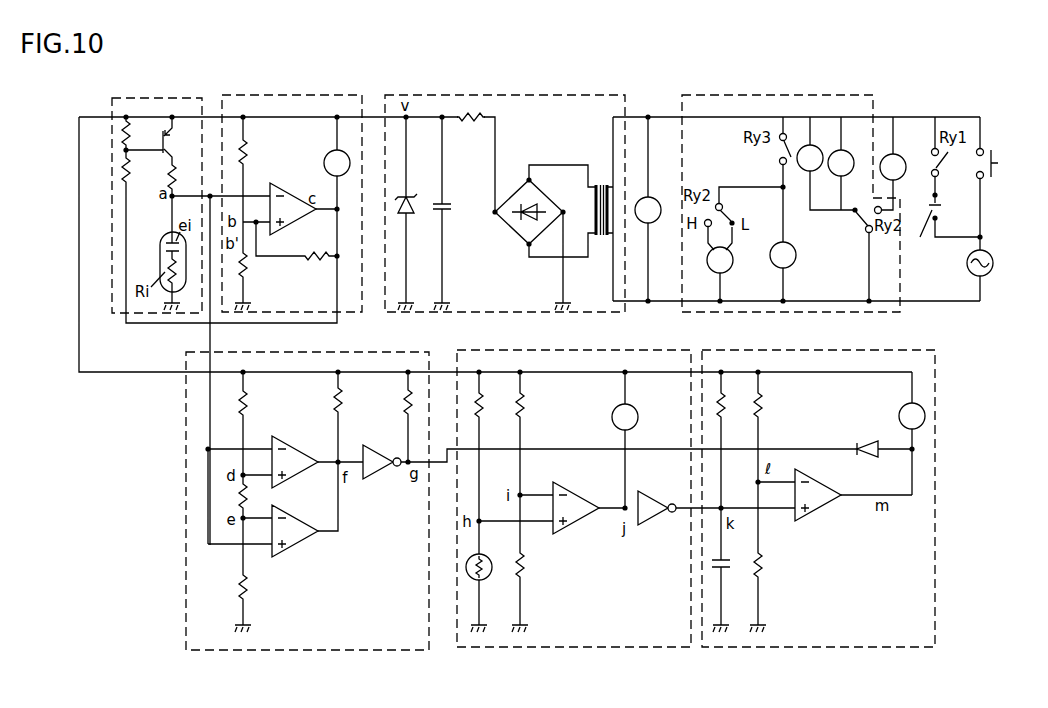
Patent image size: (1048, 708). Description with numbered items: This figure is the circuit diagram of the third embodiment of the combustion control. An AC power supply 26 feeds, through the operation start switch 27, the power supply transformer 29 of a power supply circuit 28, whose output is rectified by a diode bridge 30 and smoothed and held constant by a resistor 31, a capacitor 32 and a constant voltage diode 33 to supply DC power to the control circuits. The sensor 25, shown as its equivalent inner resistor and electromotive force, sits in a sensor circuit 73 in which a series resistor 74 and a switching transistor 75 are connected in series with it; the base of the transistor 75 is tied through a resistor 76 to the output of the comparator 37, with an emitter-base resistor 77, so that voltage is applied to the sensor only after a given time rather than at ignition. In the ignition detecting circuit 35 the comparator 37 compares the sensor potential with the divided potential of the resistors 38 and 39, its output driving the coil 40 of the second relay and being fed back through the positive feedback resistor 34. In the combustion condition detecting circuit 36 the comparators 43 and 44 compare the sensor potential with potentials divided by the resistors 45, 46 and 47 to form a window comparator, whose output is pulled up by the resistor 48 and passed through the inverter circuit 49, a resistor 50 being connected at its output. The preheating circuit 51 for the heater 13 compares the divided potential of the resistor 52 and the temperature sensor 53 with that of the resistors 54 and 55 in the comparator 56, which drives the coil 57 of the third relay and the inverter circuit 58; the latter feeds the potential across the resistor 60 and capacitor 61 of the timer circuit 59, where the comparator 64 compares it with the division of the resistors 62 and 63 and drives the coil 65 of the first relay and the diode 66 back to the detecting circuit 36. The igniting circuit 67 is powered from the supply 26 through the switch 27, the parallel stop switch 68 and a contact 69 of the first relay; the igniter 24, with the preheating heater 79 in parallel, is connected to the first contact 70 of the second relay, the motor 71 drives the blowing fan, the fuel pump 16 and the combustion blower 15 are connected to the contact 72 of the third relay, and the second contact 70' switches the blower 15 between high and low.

The heater 13 is at (657, 220).
The blower 15 is at (729, 270).
The fuel pump 16 is at (792, 266).
The igniter 24 is at (831, 172).
The sensor 25 is at (162, 236).
The AC power supply 26 is at (992, 269).
The operation start switch 27 is at (998, 163).
The power supply circuit 28 is at (530, 96).
The power supply transformer 29 is at (598, 183).
The diode bridge 30 is at (513, 232).
The resistor 31 is at (486, 115).
The capacitor 32 is at (451, 212).
The constant voltage diode 33 is at (410, 222).
The positive feedback resistor 34 is at (296, 256).
The ignition detecting circuit 35 is at (291, 96).
The combustion condition detecting circuit 36 is at (346, 650).
The comparator 37 is at (298, 197).
The resistor 38 is at (248, 148).
The resistor 39 is at (249, 272).
The coil of relay Ry2 40 is at (329, 153).
The comparator 43 is at (299, 455).
The comparator 44 is at (299, 551).
The resistor 45 is at (250, 405).
The resistor 46 is at (232, 497).
The resistor 47 is at (237, 587).
The resistor 48 is at (344, 408).
The inverter circuit 49 is at (378, 477).
The resistor 50 is at (404, 403).
The preheating circuit 51 is at (577, 648).
The resistor 52 is at (486, 416).
The temperature sensor 53 is at (487, 580).
The resistor 54 is at (528, 404).
The resistor 55 is at (527, 564).
The comparator 56 is at (575, 527).
The coil of relay Ry3 57 is at (638, 421).
The inverter circuit 58 is at (652, 522).
The timer circuit 59 is at (807, 648).
The resistor 60 is at (729, 414).
The capacitor 61 is at (727, 574).
The resistor 62 is at (764, 407).
The resistor 63 is at (765, 567).
The comparator 64 is at (828, 510).
The coil of relay Ry1 65 is at (899, 412).
The diode 66 is at (860, 443).
The igniting circuit 67 is at (751, 96).
The stop switch 68 is at (942, 226).
The relay contact Ry1 69 is at (929, 155).
The first contact of relay Ry2 70 is at (845, 254).
The second contact of relay Ry2 70' is at (744, 218).
The motor 71 is at (899, 180).
The contact of relay Ry3 72 is at (790, 150).
The sensor circuit 73 is at (176, 98).
The series resistor 74 is at (166, 177).
The switching transistor 75 is at (163, 140).
The resistor 76 is at (131, 171).
The resistor 77 is at (139, 133).
The preheating heater 79 is at (818, 149).